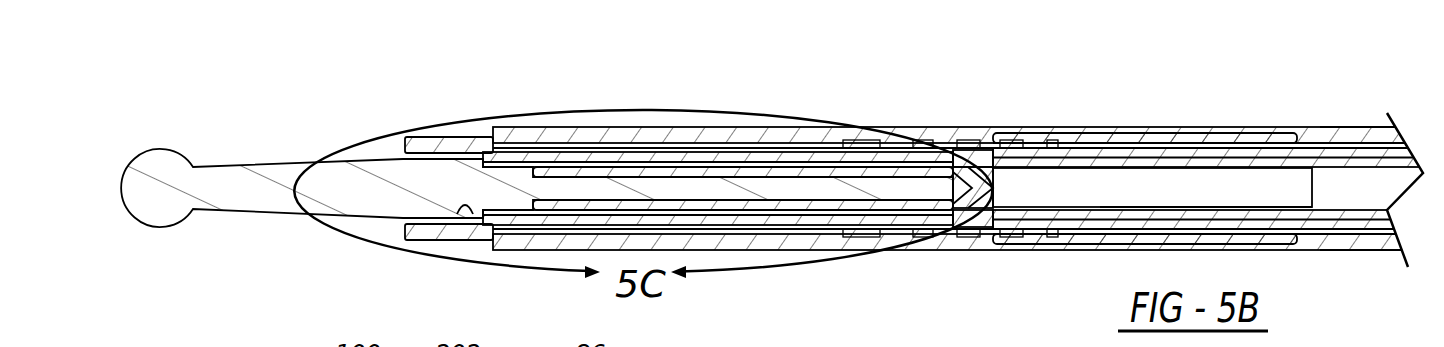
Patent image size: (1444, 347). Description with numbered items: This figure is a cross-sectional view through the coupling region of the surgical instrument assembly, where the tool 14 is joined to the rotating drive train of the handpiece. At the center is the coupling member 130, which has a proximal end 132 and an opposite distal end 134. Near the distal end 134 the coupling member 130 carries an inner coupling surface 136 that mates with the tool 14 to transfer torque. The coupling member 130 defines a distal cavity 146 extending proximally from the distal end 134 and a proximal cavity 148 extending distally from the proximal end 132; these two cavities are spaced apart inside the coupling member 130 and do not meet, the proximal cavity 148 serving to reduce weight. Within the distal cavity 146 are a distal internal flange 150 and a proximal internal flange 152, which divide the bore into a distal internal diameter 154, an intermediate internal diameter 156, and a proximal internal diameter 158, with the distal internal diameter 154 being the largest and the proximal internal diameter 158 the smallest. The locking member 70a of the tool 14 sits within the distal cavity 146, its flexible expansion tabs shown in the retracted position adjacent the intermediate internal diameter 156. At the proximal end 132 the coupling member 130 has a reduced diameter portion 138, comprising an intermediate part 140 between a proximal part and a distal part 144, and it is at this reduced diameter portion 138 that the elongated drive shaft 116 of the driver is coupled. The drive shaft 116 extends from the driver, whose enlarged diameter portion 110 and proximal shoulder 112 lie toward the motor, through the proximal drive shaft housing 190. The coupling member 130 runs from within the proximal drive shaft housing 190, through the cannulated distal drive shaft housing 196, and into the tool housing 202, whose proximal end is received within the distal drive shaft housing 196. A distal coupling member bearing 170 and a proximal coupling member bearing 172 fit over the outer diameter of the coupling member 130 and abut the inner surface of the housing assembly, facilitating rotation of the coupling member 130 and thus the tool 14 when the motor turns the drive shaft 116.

The tool 14 is at (237, 183).
The distal end 134 is at (413, 157).
The inner coupling surface 136 is at (437, 155).
The distal internal flange 150 is at (497, 160).
The proximal internal flange 152 is at (807, 163).
The locking member 70a is at (637, 168).
The intermediate internal diameter 156 is at (697, 208).
The distal drive shaft housing 196 is at (713, 127).
The tool housing 202 is at (565, 130).
The proximal coupling member bearing 172 is at (1000, 143).
The distal coupling member bearing 170 is at (868, 147).
The coupling member 130 is at (980, 158).
The distal cavity 146 is at (988, 178).
The proximal internal diameter 158 is at (947, 202).
The proximal cavity 148 is at (1113, 182).
The proximal end 132 is at (1325, 168).
The reduced diameter portion 138 is at (1200, 175).
The distal part 144 is at (1095, 218).
The intermediate part 140 is at (1175, 215).
The elongated drive shaft 116 is at (1375, 215).
The proximal drive shaft housing 190 is at (1367, 127).
The distal internal diameter 154 is at (465, 210).
The enlarged diameter portion 110 is at (1266, 7).
The proximal shoulder 112 is at (1351, 7).